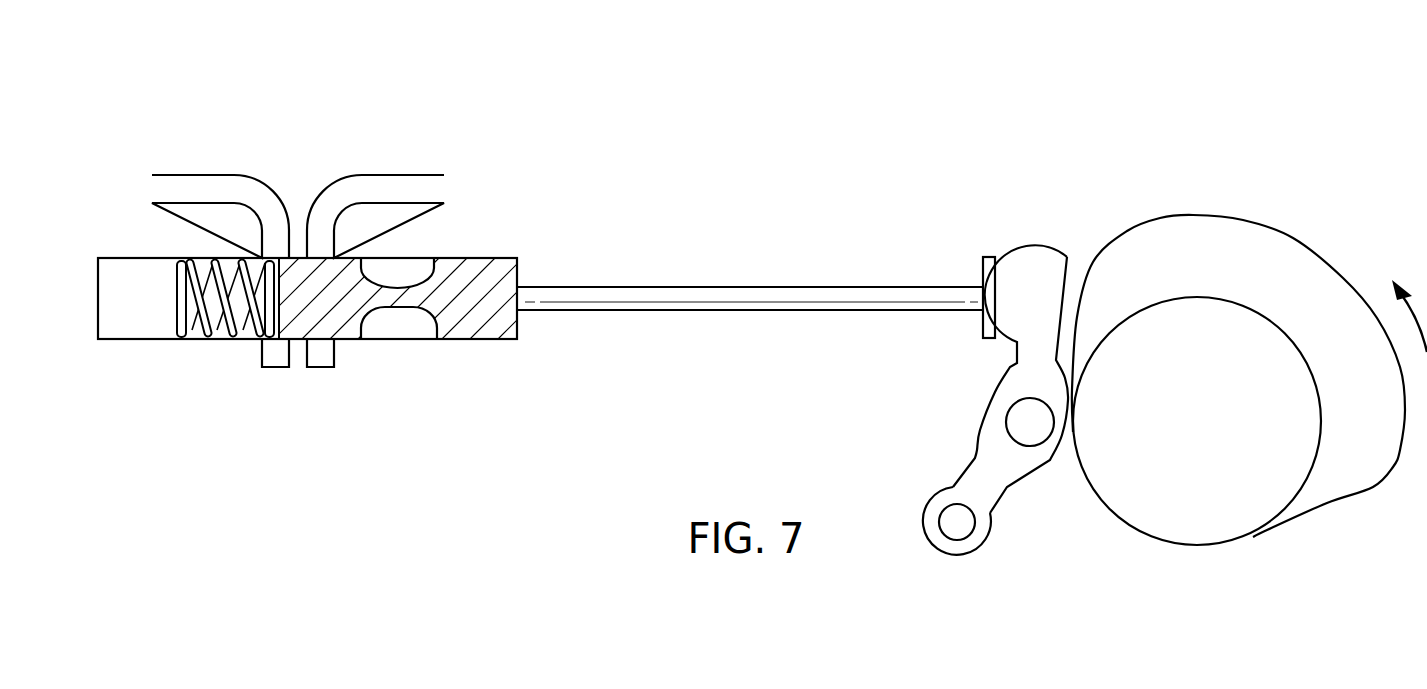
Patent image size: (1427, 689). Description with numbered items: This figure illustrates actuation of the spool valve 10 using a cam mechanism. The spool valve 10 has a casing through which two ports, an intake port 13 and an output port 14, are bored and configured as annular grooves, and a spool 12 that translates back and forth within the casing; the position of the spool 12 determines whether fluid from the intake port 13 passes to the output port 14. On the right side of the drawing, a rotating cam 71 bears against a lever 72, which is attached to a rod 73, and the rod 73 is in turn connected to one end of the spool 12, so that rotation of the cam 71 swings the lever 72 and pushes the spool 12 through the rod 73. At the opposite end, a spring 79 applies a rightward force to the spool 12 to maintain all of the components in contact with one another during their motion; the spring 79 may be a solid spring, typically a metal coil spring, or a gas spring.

The spool valve 10 is at (512, 180).
The spool 12 is at (463, 330).
The intake port 13 is at (403, 175).
The output port 14 is at (192, 175).
The spring 79 is at (210, 332).
The rod 73 is at (750, 287).
The lever 72 is at (1040, 248).
The cam 71 is at (1199, 215).